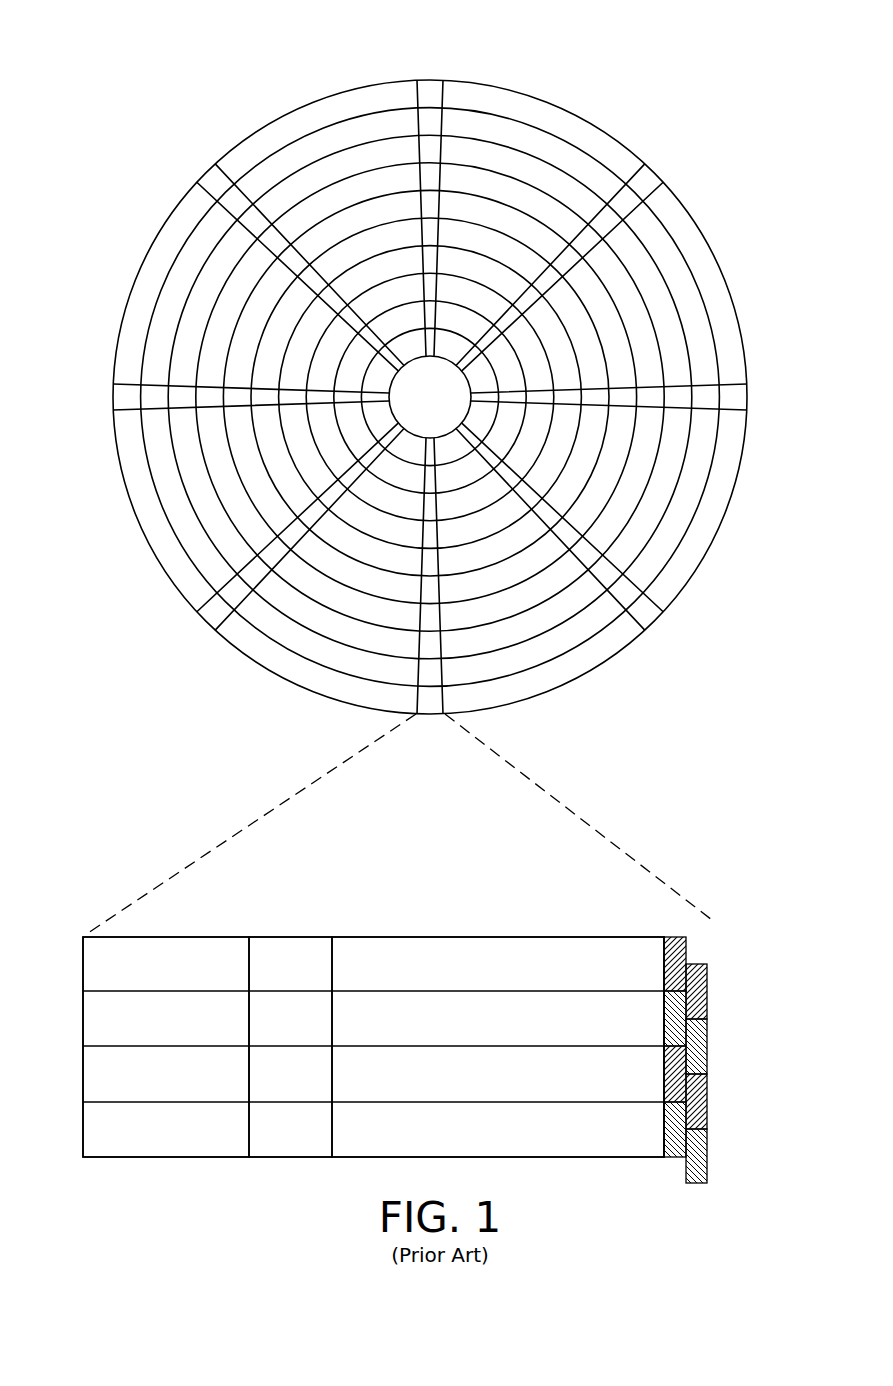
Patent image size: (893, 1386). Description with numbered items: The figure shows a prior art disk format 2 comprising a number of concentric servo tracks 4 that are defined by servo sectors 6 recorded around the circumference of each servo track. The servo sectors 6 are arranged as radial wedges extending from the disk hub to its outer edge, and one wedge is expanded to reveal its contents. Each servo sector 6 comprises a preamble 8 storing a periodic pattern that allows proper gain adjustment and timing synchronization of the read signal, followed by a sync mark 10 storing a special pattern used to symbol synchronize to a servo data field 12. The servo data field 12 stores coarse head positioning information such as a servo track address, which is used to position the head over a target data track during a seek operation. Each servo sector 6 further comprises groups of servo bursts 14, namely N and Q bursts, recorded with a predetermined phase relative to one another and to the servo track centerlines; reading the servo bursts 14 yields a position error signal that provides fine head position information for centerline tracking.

The disk format 2 is at (188, 82).
The servo tracks 4 is at (537, 145).
The servo sectors 6 is at (288, 787).
The preamble 8 is at (172, 937).
The sync mark 10 is at (292, 937).
The servo data field 12 is at (488, 937).
The servo bursts 14 is at (708, 935).